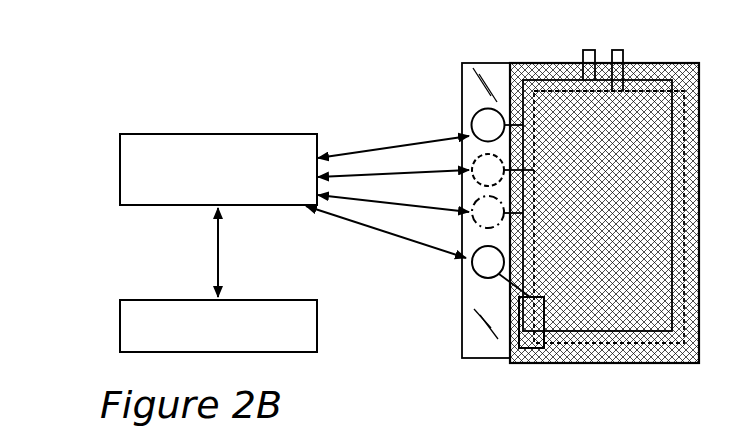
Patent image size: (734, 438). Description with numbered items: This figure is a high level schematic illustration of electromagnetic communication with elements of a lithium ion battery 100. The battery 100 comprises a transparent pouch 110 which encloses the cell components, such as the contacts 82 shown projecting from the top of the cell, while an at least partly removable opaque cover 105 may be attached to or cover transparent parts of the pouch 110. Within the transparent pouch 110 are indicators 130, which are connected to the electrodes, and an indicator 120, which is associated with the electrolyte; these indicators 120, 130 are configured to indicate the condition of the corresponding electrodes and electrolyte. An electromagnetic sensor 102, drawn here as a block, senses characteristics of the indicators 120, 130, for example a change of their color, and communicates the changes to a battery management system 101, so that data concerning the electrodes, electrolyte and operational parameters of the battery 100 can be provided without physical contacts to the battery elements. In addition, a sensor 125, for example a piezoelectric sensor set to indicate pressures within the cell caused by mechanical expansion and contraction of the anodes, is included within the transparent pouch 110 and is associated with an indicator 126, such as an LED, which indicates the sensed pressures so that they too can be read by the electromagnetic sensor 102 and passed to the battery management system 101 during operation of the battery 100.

The lithium ion battery 100 is at (238, 54).
The battery management system (BMS) 101 is at (120, 318).
The electromagnetic sensor 102 is at (120, 171).
The opaque cover 105 is at (540, 63).
The transparent pouch 110 is at (462, 72).
The indicator 130 is at (472, 120).
The indicator 120 is at (476, 222).
The LED indicator 126 is at (473, 268).
The sensor 125 is at (522, 343).
The contacts 82 is at (612, 50).